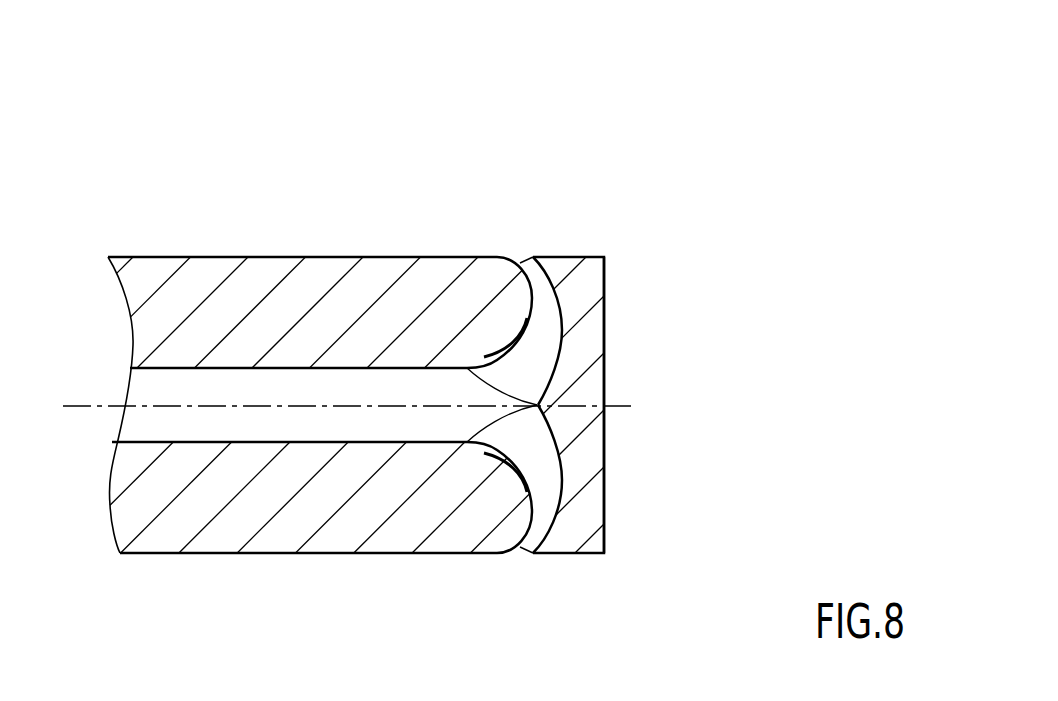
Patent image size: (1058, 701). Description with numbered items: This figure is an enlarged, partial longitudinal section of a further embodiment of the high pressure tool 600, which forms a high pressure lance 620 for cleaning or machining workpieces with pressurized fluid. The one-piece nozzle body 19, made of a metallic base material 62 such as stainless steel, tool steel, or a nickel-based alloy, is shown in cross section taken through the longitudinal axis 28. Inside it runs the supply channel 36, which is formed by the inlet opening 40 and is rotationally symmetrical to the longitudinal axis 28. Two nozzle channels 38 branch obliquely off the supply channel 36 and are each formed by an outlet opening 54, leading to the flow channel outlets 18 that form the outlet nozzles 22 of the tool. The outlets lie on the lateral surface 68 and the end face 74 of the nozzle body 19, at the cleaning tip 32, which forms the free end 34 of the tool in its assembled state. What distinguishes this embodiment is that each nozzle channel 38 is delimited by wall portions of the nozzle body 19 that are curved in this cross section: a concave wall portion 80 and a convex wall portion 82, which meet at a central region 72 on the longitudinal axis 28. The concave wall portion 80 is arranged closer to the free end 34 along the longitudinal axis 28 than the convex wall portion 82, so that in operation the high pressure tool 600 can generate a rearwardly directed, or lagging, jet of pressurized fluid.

The high pressure tool 600 is at (577, 113).
The high pressure lance 620 is at (645, 138).
The nozzle body 19 is at (282, 225).
The metallic base material 62 is at (345, 257).
The lateral surface 68 is at (445, 257).
The supply channel 36 is at (178, 362).
The inlet opening 40 is at (158, 368).
The longitudinal axis 28 is at (84, 407).
The flow channel outlets 18 is at (506, 229).
The outlet nozzles 22 is at (534, 418).
The convex wall portion 82 is at (529, 318).
The outlet opening 54 is at (523, 258).
The center cusp 72 is at (588, 392).
The cleaning tip 32 is at (650, 331).
The free end 34 is at (620, 377).
The nozzle channels 38 is at (604, 293).
The concave wall portion 80 is at (568, 297).
The end face 74 is at (604, 438).